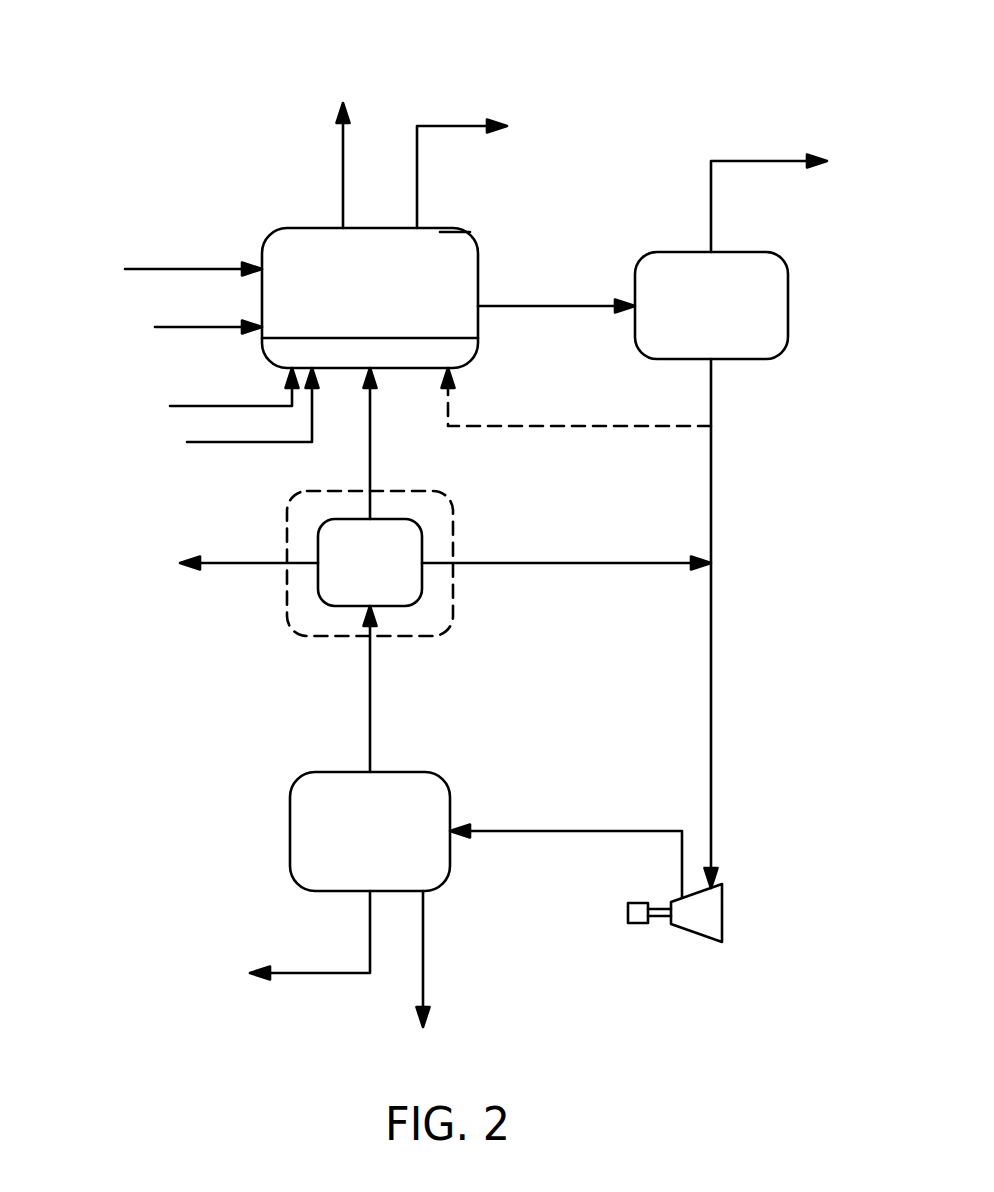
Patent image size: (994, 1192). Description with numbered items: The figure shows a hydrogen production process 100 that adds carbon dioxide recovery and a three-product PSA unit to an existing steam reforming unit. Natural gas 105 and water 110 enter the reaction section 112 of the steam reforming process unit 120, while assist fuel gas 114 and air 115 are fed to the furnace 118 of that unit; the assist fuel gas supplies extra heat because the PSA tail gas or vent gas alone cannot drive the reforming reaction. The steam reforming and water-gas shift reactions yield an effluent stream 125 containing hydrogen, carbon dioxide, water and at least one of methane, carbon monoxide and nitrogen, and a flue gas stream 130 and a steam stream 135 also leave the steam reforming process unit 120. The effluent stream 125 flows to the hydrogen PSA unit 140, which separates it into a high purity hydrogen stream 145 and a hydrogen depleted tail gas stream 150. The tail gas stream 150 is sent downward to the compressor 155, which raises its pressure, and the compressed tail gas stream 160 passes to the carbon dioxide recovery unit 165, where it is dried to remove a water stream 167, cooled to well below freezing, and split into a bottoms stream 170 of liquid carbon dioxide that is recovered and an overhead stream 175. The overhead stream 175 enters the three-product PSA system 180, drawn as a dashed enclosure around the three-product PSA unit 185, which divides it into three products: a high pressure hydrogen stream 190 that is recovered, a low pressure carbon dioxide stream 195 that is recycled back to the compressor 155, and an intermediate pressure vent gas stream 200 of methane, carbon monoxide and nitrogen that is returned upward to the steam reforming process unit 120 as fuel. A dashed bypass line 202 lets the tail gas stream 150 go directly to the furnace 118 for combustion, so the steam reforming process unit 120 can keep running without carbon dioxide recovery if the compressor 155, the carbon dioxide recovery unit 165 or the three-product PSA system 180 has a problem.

The hydrogen production process 100 is at (119, 44).
The natural gas 105 is at (145, 266).
The water 110 is at (175, 328).
The reaction section 112 is at (457, 245).
The assist fuel gas 114 is at (184, 407).
The air 115 is at (200, 443).
The furnace 118 is at (457, 350).
The steam reforming process unit 120 is at (308, 228).
The effluent stream 125 is at (557, 305).
The flue gas stream 130 is at (340, 165).
The steam stream 135 is at (463, 125).
The hydrogen PSA unit 140 is at (692, 252).
The high purity hydrogen stream 145 is at (768, 160).
The tail gas stream 150 is at (712, 458).
The compressor 155 is at (723, 913).
The compressed tail gas stream 160 is at (600, 830).
The CO2 recovery unit 165 is at (314, 772).
The water stream 167 is at (424, 958).
The bottoms stream 170 is at (310, 975).
The overhead stream 175 is at (371, 688).
The three-product PSA system 180 is at (415, 490).
The three-product PSA unit 185 is at (355, 537).
The high pressure hydrogen stream 190 is at (233, 565).
The low pressure CO2 stream 195 is at (549, 565).
The intermediate pressure vent gas stream 200 is at (371, 444).
The bypass line 202 is at (573, 428).